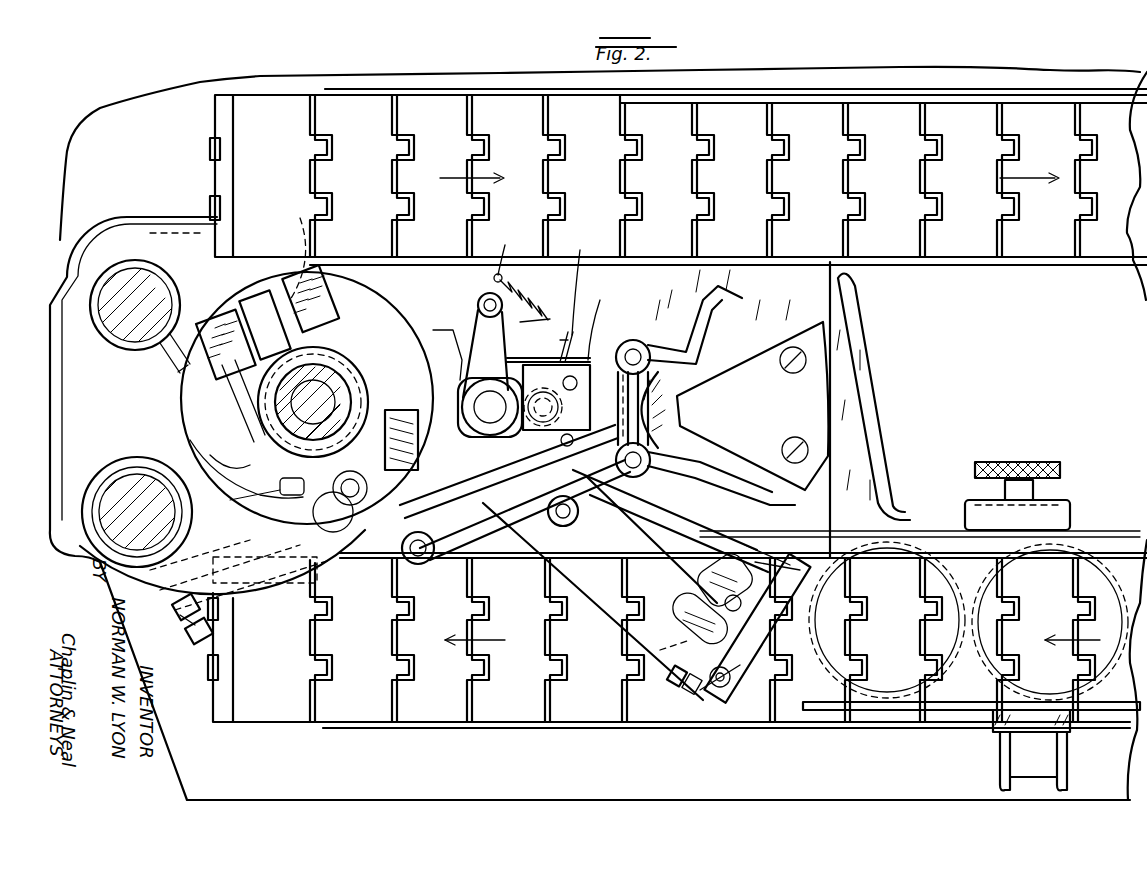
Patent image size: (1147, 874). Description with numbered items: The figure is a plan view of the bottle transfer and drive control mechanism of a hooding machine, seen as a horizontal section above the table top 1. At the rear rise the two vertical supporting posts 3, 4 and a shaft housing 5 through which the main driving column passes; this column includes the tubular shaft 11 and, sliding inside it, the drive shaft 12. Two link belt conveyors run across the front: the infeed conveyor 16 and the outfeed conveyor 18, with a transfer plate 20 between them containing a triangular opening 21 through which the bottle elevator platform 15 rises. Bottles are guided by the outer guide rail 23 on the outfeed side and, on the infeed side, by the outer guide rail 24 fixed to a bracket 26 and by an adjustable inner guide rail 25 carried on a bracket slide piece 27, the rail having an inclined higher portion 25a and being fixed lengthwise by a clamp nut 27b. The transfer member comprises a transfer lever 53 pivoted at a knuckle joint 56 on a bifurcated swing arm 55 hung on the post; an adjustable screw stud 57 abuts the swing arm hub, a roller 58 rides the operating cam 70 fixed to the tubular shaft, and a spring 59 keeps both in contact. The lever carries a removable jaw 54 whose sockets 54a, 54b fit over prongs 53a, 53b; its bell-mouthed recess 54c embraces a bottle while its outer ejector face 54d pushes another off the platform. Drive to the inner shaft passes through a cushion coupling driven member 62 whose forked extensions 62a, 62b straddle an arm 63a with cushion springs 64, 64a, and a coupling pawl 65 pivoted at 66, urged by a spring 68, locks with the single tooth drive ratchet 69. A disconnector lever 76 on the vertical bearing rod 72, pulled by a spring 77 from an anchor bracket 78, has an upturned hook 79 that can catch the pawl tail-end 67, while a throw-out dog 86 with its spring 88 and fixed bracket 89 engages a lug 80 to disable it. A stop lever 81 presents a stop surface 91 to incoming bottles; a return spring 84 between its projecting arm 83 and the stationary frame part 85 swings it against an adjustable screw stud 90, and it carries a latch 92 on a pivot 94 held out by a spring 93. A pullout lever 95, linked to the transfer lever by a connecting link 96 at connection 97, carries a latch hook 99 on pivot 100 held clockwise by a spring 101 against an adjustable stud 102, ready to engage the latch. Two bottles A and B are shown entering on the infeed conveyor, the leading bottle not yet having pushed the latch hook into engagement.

The top 1 is at (160, 228).
The vertical supporting post 3 is at (960, 408).
The vertical supporting post 4 is at (312, 755).
The shaft housing 5 is at (391, 577).
The tubular shaft 11 is at (330, 370).
The drive shaft 12 is at (365, 372).
The bottle elevator platform 15 is at (752, 406).
The link belt conveyor 16 is at (440, 722).
The link belt conveyor 18 is at (1110, 250).
The transfer plate 20 is at (808, 275).
The triangular opening 21 is at (850, 318).
The outer guide rail 23 is at (1098, 95).
The outer guide rail 24 is at (1105, 708).
The inner guide rail 25 is at (1105, 535).
The higher portion 25a is at (885, 452).
The bracket 26 is at (1045, 768).
The bracket slide piece 27 is at (1060, 512).
The clamp nut 27b is at (1040, 455).
The transfer lever 53 is at (240, 566).
The prong 53a is at (622, 345).
The prong 53b is at (624, 470).
The removable jaw 54 is at (725, 318).
The socket 54a is at (700, 312).
The socket 54b is at (652, 472).
The bell-mouthed recess 54c is at (685, 395).
The outer ejector face 54d is at (700, 295).
The swing arm 55 is at (282, 590).
The knuckle joint 56 is at (348, 545).
The adjustable screw stud 57 is at (200, 640).
The roller 58 is at (385, 565).
The spring 59 is at (196, 445).
The cushion coupling driven member 62 is at (340, 380).
The forked extension 62a is at (220, 315).
The forked extension 62b is at (335, 272).
The arm 63a is at (268, 297).
The cushion spring 64 is at (265, 373).
The cushion spring 64a is at (296, 252).
The coupling pawl 65 is at (267, 503).
The pivot 66 is at (340, 504).
The tail-end 67 is at (460, 495).
The spring 68 is at (418, 430).
The single tooth drive ratchet 69 is at (250, 452).
The operating cam 70 is at (378, 292).
The vertical bearing rod 72 is at (456, 375).
The disconnector lever 76 is at (462, 380).
The spring 77 is at (480, 295).
The anchor bracket 78 is at (535, 331).
The upturned hook 79 is at (425, 560).
The lug 80 is at (490, 392).
The stop lever 81 is at (670, 521).
The projecting arm 83 is at (579, 284).
The return spring 84 is at (535, 312).
The stationary part of the frame 85 is at (506, 255).
The throw-out dog 86 is at (509, 471).
The spring 88 is at (557, 390).
The fixed bracket 89 is at (563, 347).
The adjustable screw stud 90 is at (598, 321).
The stop surface 91 is at (790, 562).
The latch 92 is at (760, 548).
The spring 93 is at (725, 572).
The pivot 94 is at (690, 610).
The pullout lever 95 is at (600, 580).
The connecting link 96 is at (525, 510).
The connection 97 is at (568, 527).
The latch hook 99 is at (775, 660).
The pivot 100 is at (724, 688).
The spring 101 is at (660, 650).
The adjustable stud 102 is at (675, 690).
The bottle A is at (825, 645).
The bottle B is at (1000, 565).